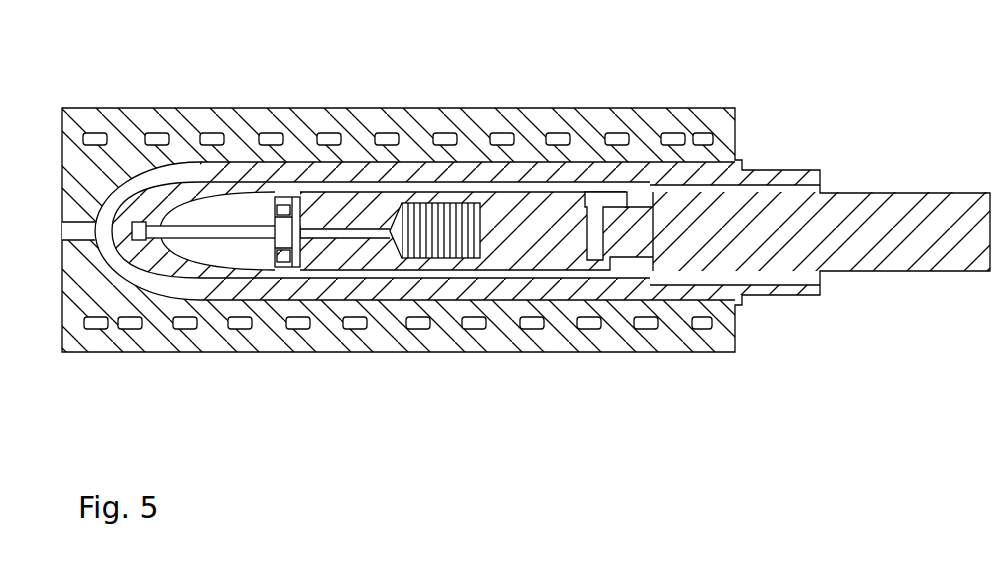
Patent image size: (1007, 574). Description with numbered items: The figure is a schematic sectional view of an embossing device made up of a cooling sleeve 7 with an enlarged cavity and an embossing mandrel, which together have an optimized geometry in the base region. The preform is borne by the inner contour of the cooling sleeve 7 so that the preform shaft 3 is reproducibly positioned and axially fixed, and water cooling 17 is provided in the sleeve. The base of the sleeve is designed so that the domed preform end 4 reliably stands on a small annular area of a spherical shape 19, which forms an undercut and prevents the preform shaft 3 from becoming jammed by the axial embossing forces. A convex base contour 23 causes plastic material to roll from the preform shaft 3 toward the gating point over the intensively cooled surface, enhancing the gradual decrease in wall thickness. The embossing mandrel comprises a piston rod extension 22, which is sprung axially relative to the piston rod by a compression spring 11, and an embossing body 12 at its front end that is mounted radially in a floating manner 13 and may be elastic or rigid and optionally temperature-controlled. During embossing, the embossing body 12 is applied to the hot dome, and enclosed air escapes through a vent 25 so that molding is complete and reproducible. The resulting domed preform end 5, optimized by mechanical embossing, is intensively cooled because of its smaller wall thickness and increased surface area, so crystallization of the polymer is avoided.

The preform shaft 3 is at (258, 175).
The domed preform end 4 is at (157, 200).
The domed preform end optimized by mechanical embossing 5 is at (125, 195).
The cooling sleeve 7 is at (368, 147).
The compression spring 11 is at (430, 240).
The embossing body 12 is at (230, 240).
The floating radial mounting 13 is at (272, 270).
The water cooling 17 is at (440, 140).
The base contour with supporting circular ring of a spherical shape 19 is at (200, 285).
The piston rod extension 22 is at (284, 262).
The convex base contour 23 is at (127, 275).
The vent 25 is at (175, 245).